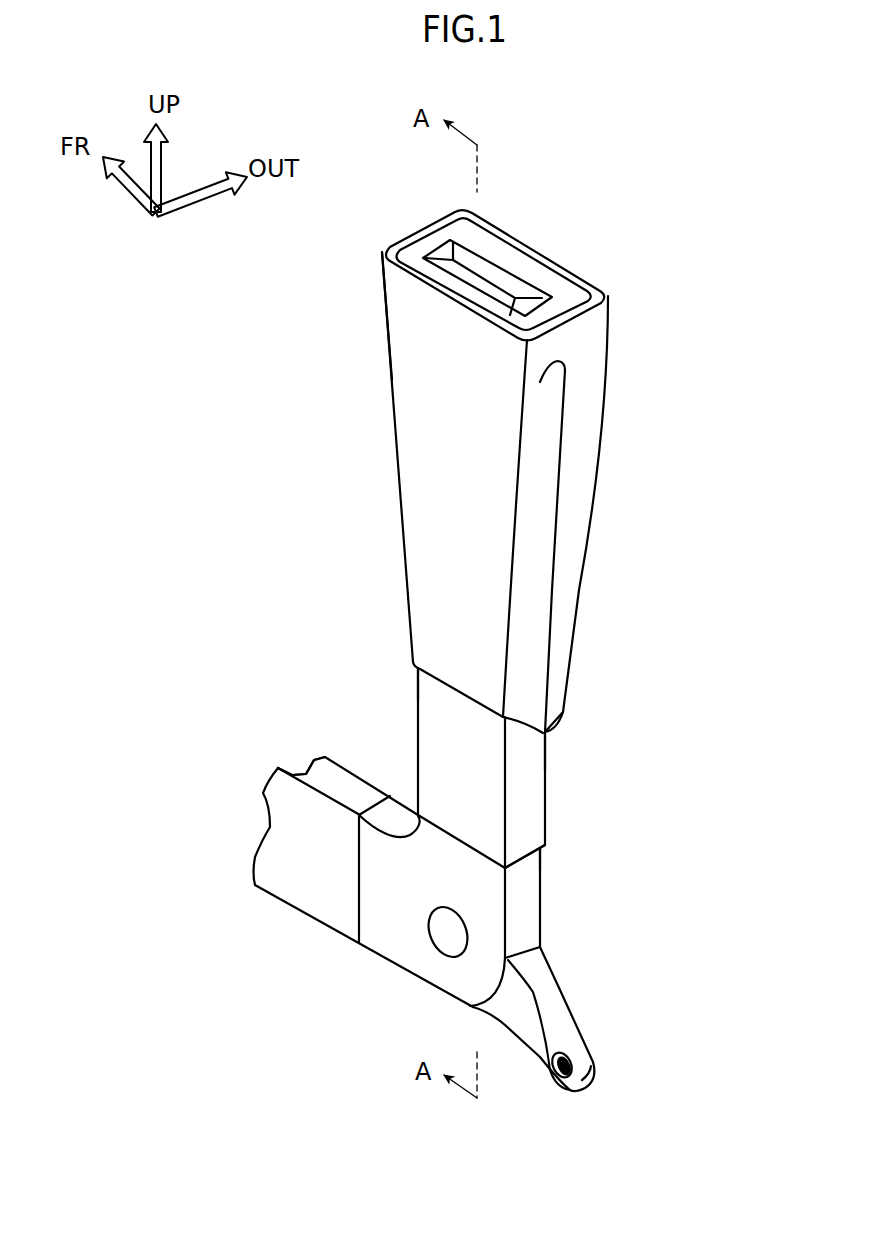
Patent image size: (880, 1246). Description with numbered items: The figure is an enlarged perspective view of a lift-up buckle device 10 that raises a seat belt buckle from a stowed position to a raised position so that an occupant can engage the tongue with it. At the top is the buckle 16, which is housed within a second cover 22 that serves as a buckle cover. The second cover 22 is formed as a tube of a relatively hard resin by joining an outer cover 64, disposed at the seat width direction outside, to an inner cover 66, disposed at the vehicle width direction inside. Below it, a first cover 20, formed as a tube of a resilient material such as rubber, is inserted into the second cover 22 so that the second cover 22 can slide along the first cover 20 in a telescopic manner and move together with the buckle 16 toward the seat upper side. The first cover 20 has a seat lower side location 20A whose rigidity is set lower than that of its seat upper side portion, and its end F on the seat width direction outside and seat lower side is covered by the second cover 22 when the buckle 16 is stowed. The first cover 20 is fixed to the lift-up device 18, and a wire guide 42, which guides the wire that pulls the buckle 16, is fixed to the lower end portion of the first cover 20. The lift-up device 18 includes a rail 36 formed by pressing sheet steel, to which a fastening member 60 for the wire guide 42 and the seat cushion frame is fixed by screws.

The lift-up buckle device 10 is at (656, 266).
The buckle 16 is at (512, 263).
The lift-up device 18 is at (360, 856).
The first cover 20 is at (584, 879).
The seat lower side location 20A is at (545, 817).
The second cover 22 is at (521, 439).
The rail 36 is at (330, 777).
The wire guide 42 is at (523, 917).
The fastening member 60 is at (578, 1023).
The outer cover 64 is at (597, 504).
The inner cover 66 is at (395, 443).
The end of the first cover on the seat width direction outside and seat lower side F is at (540, 845).